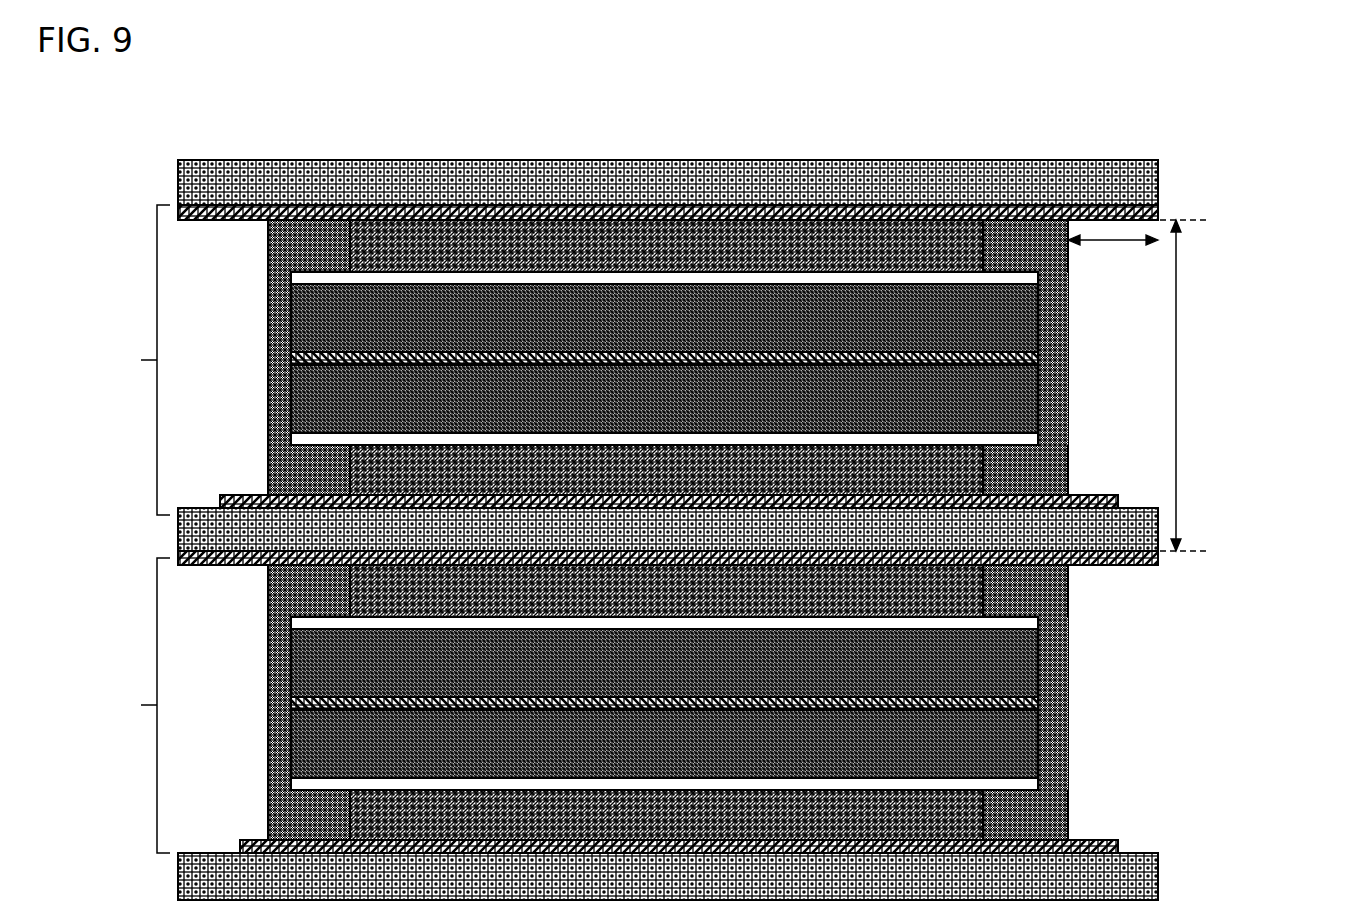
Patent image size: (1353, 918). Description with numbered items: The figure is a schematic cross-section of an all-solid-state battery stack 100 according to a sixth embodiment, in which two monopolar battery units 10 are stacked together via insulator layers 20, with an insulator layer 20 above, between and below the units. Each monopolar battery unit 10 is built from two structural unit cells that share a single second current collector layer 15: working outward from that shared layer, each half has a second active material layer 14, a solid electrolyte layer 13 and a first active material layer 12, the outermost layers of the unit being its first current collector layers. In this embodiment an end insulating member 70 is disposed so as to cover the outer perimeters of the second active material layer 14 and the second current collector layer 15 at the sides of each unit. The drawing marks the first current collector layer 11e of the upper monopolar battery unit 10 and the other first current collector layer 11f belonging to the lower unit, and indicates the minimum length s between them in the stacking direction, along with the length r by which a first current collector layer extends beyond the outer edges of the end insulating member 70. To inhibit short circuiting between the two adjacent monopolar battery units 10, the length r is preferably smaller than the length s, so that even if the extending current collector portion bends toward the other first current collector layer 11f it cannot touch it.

The all-solid-state battery stack 100 is at (1215, 337).
The monopolar battery unit 10 is at (625, 529).
The first current collector layer 11e is at (1162, 213).
The first current collector layer 11f is at (1162, 559).
The first active material layer 12 is at (363, 257).
The solid electrolyte layer 13 is at (318, 279).
The second active material layer 14 is at (305, 322).
The second current collector layer 15 is at (300, 358).
The insulator layer 20 is at (1130, 176).
The end insulating member 70 is at (1050, 357).